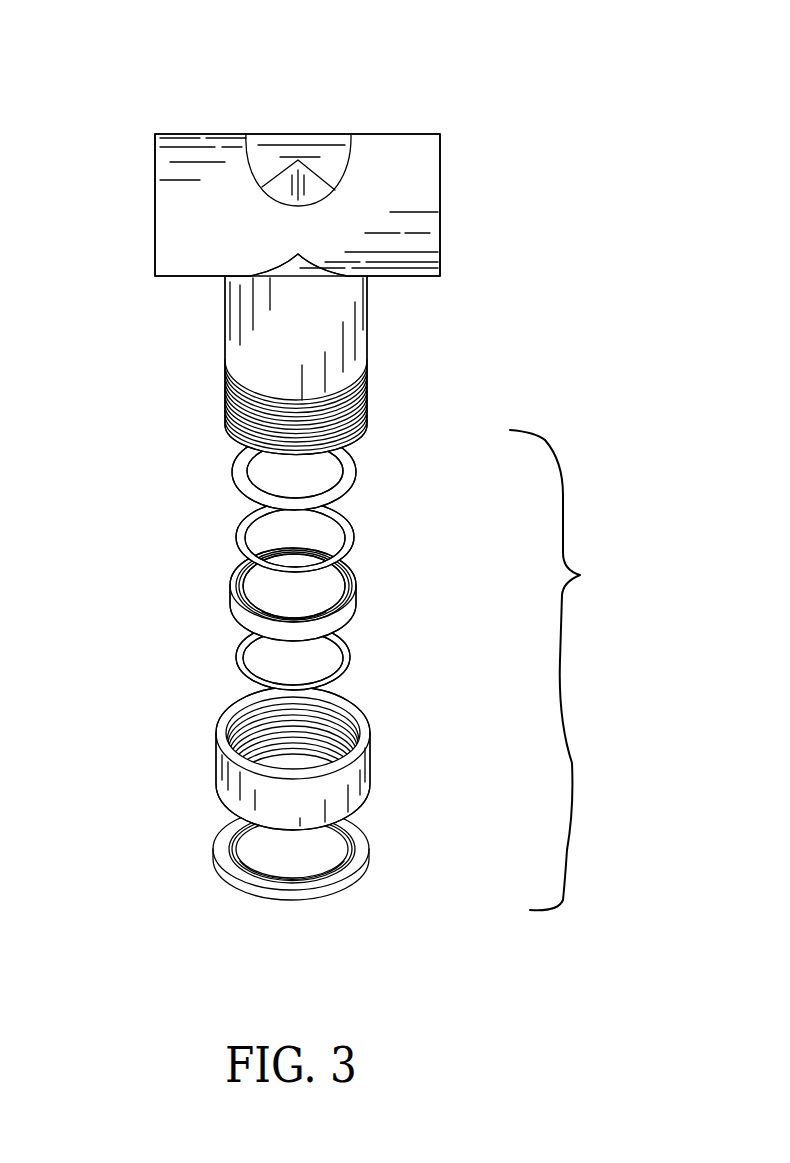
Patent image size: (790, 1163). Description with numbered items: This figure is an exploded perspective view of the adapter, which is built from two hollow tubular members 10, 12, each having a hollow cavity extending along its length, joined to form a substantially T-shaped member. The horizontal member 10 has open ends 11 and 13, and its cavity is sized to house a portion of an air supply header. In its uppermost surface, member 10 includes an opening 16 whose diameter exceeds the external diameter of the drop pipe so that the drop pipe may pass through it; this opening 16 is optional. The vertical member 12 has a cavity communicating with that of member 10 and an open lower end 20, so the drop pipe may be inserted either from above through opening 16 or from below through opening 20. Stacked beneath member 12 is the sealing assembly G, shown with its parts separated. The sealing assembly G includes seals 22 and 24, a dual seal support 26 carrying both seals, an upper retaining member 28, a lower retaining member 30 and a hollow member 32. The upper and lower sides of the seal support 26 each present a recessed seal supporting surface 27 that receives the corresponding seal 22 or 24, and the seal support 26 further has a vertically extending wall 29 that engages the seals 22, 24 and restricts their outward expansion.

The hollow tubular member 10 is at (318, 160).
The open end 11 is at (155, 186).
The hollow tubular member 12 is at (368, 365).
The open end 13 is at (449, 203).
The opening 16 is at (301, 157).
The open lower end 20 is at (367, 433).
The seal 22 is at (352, 537).
The seal 24 is at (350, 672).
The dual seal support 26 is at (294, 585).
The recessed seal supporting surface 27 is at (243, 560).
The upper retaining member 28 is at (362, 464).
The vertically extending wall 29 is at (247, 618).
The lower retaining member 30 is at (362, 877).
The hollow member 32 is at (372, 763).
The sealing assembly G is at (572, 670).